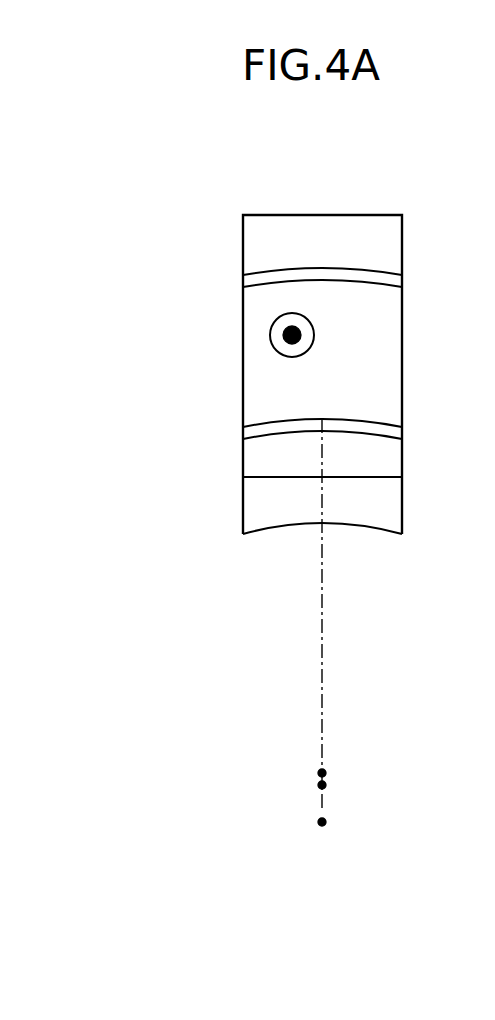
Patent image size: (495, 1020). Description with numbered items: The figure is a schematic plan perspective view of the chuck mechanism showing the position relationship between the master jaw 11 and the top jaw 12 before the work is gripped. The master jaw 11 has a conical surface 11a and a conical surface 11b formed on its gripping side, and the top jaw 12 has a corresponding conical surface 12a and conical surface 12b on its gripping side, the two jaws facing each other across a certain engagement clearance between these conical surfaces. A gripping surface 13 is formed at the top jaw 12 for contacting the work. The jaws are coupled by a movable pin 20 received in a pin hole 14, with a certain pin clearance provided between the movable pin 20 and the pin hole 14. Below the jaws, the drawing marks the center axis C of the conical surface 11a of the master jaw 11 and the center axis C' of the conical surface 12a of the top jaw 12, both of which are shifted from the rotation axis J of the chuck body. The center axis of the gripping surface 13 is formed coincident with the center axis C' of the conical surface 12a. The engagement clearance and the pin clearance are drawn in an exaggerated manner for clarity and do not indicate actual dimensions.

The master jaw 11 is at (388, 455).
The conical surface 11a is at (270, 420).
The conical surface 11b is at (372, 287).
The top jaw 12 is at (388, 500).
The conical surface 12a is at (291, 434).
The conical surface 12b is at (347, 265).
The gripping surface 13 is at (358, 526).
The pin hole 14 is at (277, 313).
The movable pin 20 is at (283, 333).
The center axis C is at (354, 751).
The center axis C' is at (390, 787).
The rotation axis J is at (318, 825).